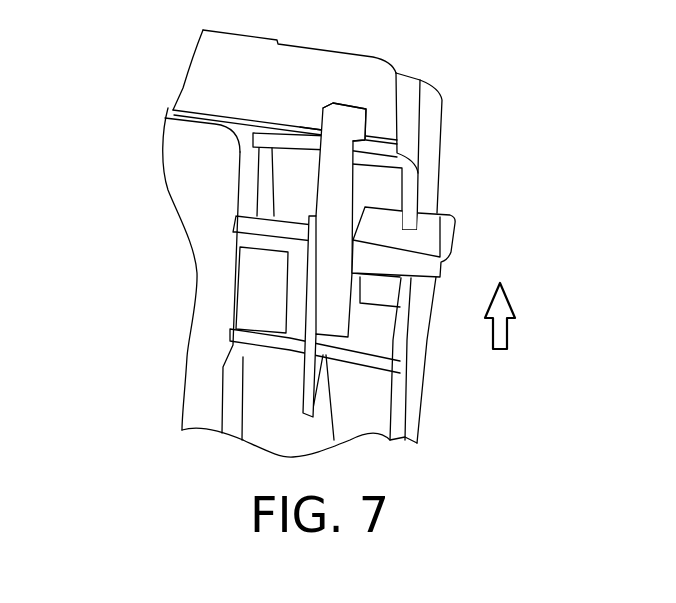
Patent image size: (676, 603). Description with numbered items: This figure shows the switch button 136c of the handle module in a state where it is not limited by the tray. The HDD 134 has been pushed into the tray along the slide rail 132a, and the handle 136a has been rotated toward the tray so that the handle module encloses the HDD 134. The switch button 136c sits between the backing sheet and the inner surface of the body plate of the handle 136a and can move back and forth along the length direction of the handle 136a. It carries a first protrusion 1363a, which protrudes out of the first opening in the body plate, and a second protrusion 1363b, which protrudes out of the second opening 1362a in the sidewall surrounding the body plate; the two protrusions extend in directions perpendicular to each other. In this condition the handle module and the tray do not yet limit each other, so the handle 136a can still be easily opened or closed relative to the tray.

The slide rail 132a is at (212, 64).
The HDD 134 is at (193, 144).
The handle 136a is at (430, 165).
The switch button 136c is at (340, 200).
The second opening 1362a is at (345, 105).
The first protrusion 1363a is at (450, 252).
The second protrusion 1363b is at (345, 148).